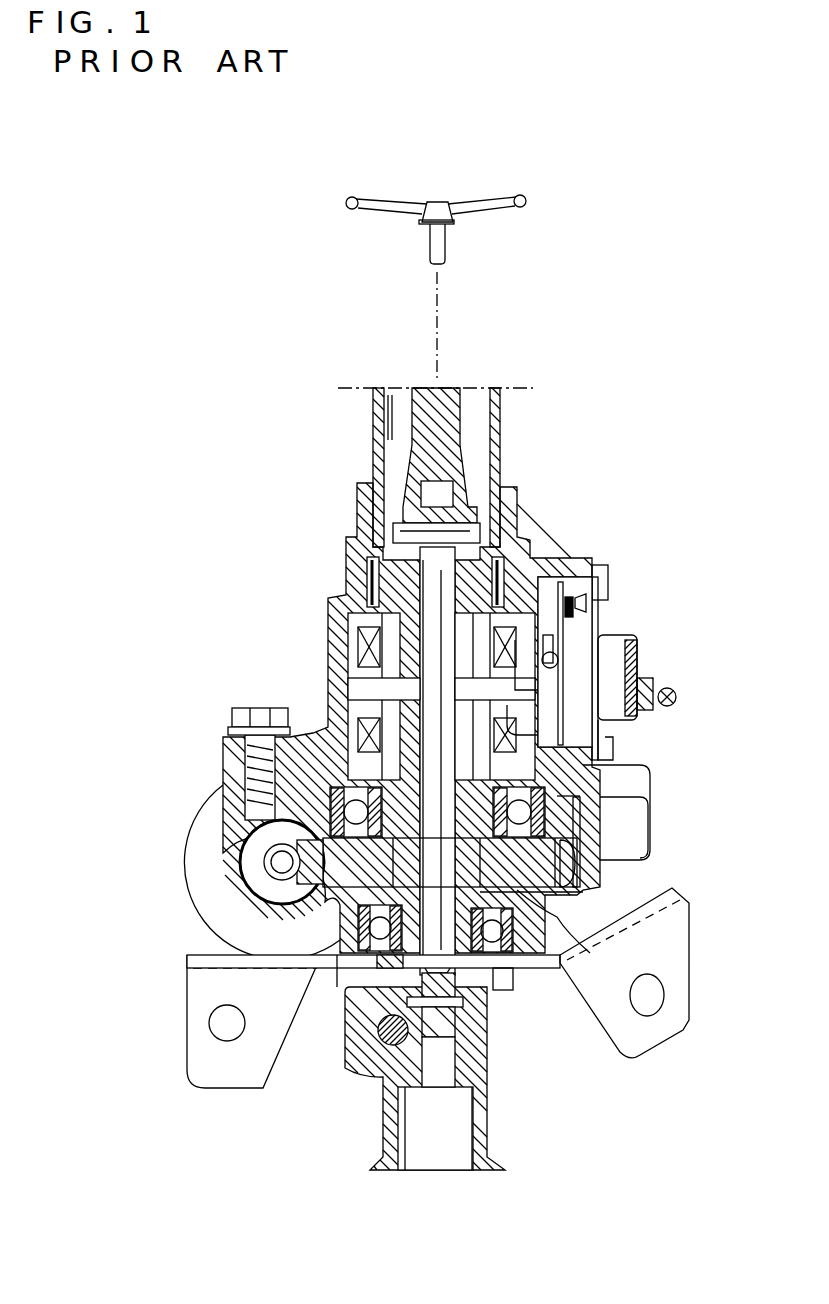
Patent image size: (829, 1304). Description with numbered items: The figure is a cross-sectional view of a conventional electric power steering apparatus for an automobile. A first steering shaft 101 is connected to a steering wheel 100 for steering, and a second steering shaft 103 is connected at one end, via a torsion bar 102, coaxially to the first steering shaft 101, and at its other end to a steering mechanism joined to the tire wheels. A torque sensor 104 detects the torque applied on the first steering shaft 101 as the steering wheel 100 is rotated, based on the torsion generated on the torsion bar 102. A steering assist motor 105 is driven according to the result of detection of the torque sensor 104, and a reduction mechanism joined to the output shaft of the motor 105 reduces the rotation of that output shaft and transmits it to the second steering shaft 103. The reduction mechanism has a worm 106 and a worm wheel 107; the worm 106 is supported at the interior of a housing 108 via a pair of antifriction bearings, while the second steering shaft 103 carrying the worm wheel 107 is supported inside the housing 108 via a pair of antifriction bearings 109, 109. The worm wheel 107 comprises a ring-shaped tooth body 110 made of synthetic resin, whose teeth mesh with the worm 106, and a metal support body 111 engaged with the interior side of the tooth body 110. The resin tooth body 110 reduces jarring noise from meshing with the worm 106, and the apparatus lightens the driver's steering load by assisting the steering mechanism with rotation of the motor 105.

The steering wheel 100 is at (523, 201).
The first steering shaft 101 is at (455, 431).
The torsion bar 102 is at (528, 556).
The second steering shaft 103 is at (490, 977).
The torque sensor 104 is at (573, 697).
The steering assist motor 105 is at (187, 866).
The worm 106 is at (245, 838).
The worm wheel 107 is at (285, 940).
The housing 108 is at (320, 670).
The antifriction bearings 109 is at (240, 807).
The tooth body 110 is at (553, 870).
The support body 111 is at (567, 897).